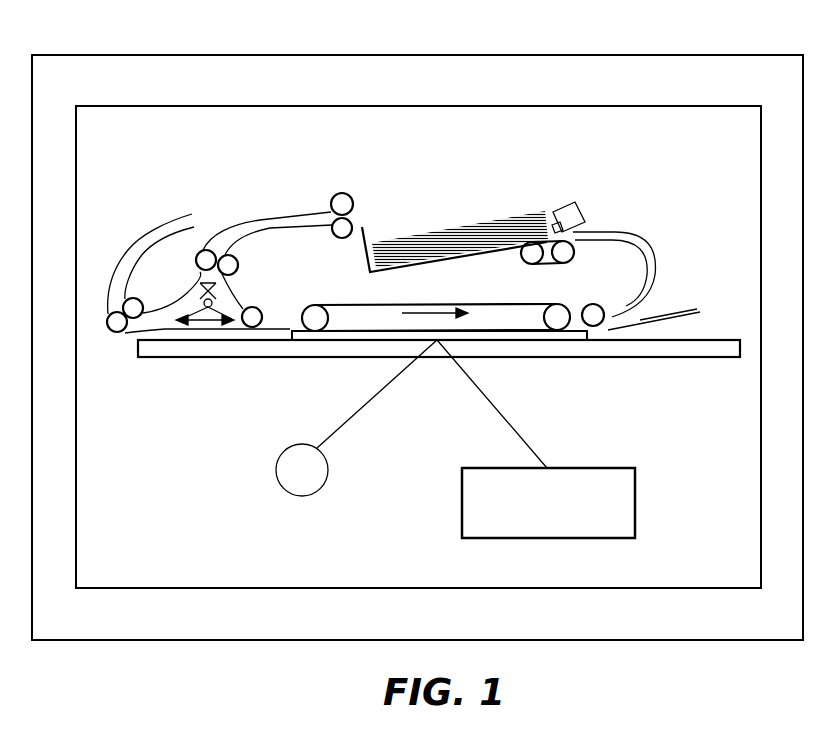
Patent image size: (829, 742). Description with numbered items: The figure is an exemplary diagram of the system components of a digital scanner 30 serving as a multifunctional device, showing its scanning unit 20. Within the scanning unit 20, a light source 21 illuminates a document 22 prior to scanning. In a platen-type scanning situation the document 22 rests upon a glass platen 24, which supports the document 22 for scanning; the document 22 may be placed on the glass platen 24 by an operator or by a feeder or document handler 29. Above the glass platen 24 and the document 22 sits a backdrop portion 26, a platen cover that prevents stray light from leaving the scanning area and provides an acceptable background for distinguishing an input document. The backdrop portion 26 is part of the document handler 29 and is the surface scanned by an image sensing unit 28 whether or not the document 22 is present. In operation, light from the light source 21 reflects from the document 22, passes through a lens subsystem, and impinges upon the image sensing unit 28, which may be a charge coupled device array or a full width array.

The scanning unit 20 is at (392, 588).
The light source 21 is at (302, 498).
The document 22 is at (370, 357).
The glass platen 24 is at (255, 357).
The backdrop portion 26 is at (497, 326).
The image sensing unit 28 is at (590, 468).
The document handler 29 is at (577, 191).
The digital scanner 30 is at (541, 50).